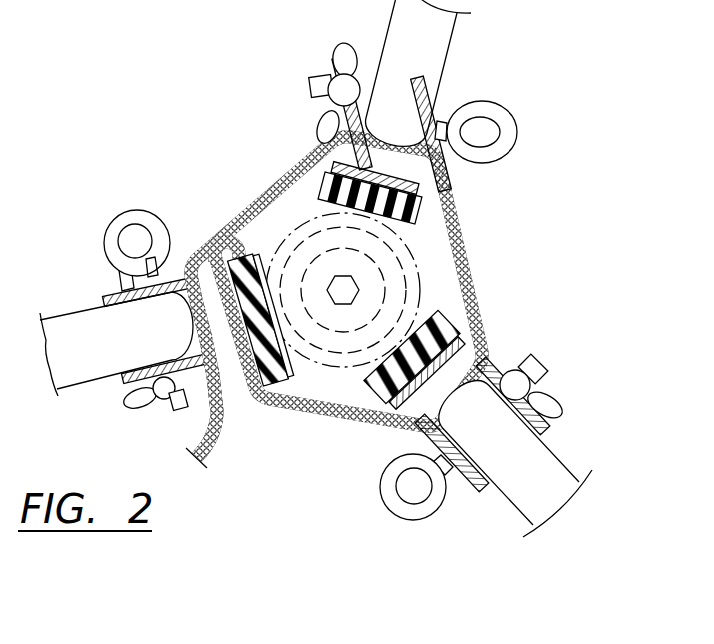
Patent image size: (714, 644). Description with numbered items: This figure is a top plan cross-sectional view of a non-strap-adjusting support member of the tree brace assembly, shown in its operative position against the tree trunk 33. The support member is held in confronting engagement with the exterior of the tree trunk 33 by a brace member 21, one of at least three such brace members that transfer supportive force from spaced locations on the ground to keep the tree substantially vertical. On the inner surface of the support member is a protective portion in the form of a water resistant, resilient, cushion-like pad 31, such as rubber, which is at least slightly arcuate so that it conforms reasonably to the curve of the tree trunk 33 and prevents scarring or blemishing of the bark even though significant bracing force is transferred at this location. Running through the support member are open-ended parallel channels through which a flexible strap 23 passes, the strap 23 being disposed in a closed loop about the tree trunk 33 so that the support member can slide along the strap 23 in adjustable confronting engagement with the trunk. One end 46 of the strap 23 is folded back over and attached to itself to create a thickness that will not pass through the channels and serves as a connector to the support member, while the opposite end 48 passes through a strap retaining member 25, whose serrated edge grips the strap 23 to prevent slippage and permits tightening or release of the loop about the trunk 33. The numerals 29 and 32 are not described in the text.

The brace member 21 is at (548, 470).
The flexible strap 23 is at (448, 206).
The strap retaining member 25 is at (201, 394).
The eye bolt 29 is at (113, 220).
The protective pad 31 is at (408, 232).
The wing nut 32 is at (138, 401).
The tree trunk 33 is at (403, 298).
The opposite end of strap 46 is at (230, 241).
The end of strap 48 is at (205, 464).